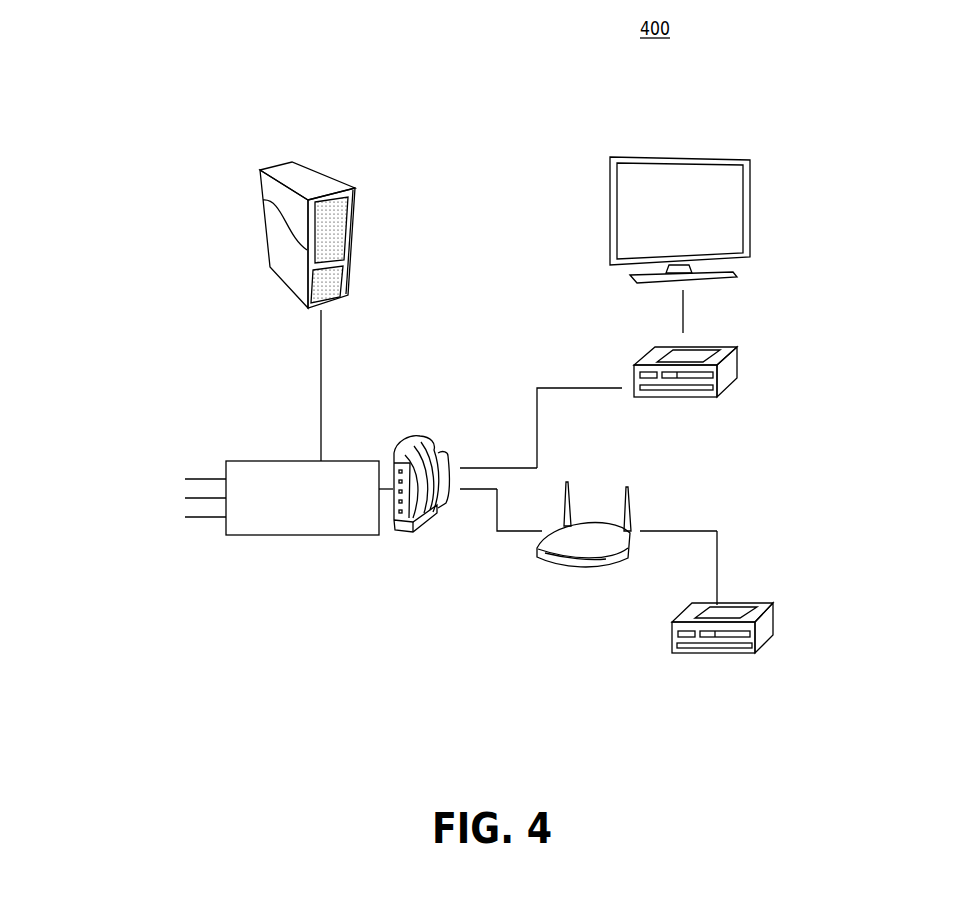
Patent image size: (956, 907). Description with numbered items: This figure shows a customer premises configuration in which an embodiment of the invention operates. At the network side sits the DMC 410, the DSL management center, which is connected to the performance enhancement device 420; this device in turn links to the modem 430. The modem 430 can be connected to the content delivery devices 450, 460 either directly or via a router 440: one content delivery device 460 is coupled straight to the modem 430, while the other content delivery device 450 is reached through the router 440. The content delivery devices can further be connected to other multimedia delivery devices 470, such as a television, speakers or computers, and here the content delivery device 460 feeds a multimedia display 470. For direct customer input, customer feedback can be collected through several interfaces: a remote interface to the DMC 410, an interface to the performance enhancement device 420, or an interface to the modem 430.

The DMC 410 is at (320, 171).
The performance enhancement device 420 is at (295, 537).
The modem 430 is at (427, 525).
The router 440 is at (575, 613).
The content delivery device 450 is at (737, 598).
The content delivery device 460 is at (632, 370).
The multimedia delivery device 470 is at (610, 187).